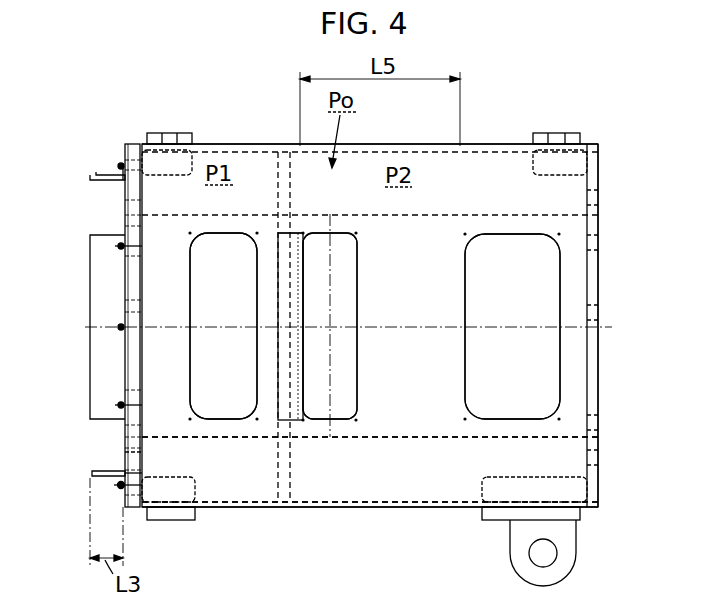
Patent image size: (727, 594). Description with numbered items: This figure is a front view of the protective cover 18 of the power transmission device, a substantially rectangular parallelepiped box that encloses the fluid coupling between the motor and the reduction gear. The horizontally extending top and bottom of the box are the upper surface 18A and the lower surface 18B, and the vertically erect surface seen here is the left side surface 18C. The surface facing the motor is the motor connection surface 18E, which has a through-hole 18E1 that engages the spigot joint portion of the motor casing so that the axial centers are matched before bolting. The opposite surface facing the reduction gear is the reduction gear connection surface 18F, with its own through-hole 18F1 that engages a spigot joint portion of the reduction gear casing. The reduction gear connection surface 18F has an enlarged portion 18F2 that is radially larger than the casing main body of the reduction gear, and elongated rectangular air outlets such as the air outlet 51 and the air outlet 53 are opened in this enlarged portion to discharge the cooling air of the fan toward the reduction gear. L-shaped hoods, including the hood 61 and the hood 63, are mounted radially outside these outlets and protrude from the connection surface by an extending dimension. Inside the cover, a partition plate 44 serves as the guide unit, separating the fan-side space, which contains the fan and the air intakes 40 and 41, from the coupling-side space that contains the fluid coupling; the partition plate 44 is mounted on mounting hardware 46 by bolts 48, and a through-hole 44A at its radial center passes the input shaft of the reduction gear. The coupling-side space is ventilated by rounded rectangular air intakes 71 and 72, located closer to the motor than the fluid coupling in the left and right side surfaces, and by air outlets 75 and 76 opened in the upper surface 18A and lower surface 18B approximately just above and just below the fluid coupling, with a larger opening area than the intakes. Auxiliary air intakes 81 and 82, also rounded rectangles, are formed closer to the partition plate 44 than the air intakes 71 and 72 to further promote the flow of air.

The protective cover 18 is at (490, 144).
The upper surface 18A is at (248, 143).
The lower surface 18B is at (278, 507).
The left side surface 18C is at (402, 482).
The motor connection surface 18E is at (600, 478).
The through-hole 18E1 is at (596, 404).
The reduction gear connection surface 18F is at (122, 459).
The through-hole 18F1 is at (123, 266).
The enlarged portion 18F2 is at (110, 487).
The air intake 40 is at (230, 422).
The air intake 41 is at (223, 326).
The partition plate 44 is at (292, 492).
The through-hole 44A is at (278, 240).
The mounting hardware 46 is at (278, 360).
The bolts 48 is at (278, 345).
The air outlet 51 is at (125, 215).
The air outlet 53 is at (140, 448).
The hood 61 is at (99, 172).
The hood 63 is at (92, 472).
The air intake 71 is at (555, 380).
The air intake 72 is at (512, 326).
The air outlet 75 is at (455, 147).
The air outlet 76 is at (462, 503).
The auxiliary air intake 81 is at (352, 375).
The auxiliary air intake 82 is at (330, 326).